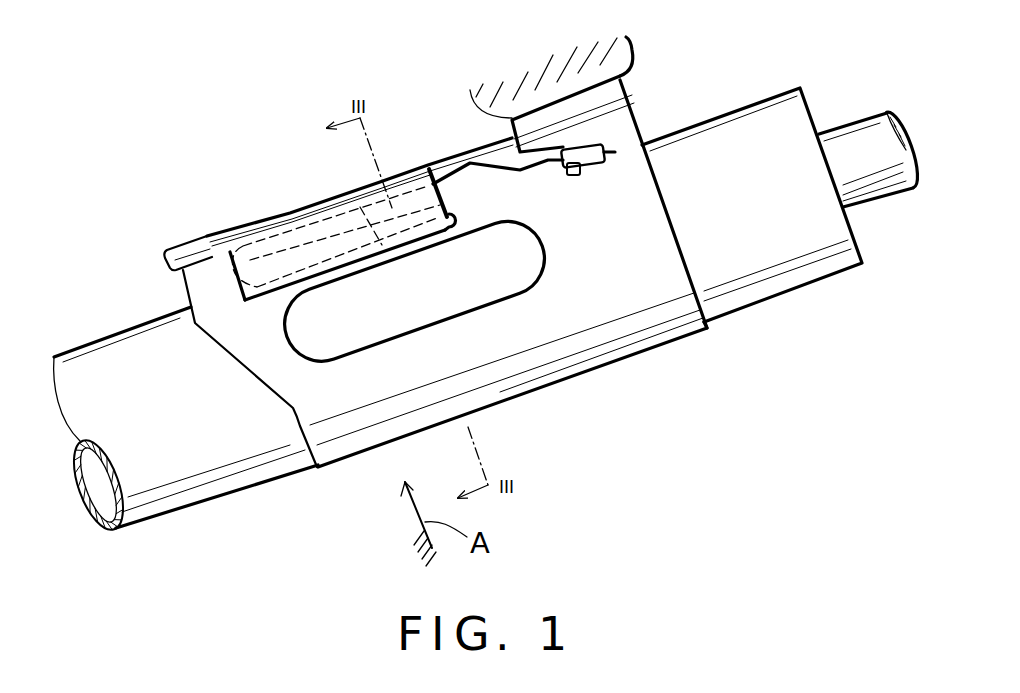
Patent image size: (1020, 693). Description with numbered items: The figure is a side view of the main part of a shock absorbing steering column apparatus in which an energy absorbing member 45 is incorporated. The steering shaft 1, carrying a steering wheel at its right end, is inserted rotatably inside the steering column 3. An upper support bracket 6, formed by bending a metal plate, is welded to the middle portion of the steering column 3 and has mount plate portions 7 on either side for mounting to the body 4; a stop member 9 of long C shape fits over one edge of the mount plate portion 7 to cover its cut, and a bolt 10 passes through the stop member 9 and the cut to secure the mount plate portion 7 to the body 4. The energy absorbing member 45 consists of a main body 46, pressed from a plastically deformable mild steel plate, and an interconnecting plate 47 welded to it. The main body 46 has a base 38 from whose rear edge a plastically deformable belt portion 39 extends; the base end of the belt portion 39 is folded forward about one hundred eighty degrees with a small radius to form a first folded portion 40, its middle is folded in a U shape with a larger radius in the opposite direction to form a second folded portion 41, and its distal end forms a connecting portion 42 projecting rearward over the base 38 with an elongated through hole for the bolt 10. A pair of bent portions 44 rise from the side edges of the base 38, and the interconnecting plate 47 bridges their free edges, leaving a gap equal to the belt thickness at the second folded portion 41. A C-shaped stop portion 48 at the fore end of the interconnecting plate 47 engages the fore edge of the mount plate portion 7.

The steering shaft 1 is at (866, 183).
The steering column 3 is at (752, 262).
The body 4 is at (552, 74).
The upper support bracket 6 is at (345, 438).
The mount plate portion 7 is at (260, 222).
The stop member 9 is at (622, 78).
The bolt 10 is at (640, 138).
The base 38 is at (343, 232).
The belt portion 39 is at (460, 152).
The first folded portion 40 is at (472, 226).
The second folded portion 41 is at (233, 270).
The connecting portion 42 is at (647, 128).
The bent portion 44 is at (316, 209).
The energy absorbing member 45 is at (226, 287).
The main body 46 is at (283, 292).
The interconnecting plate 47 is at (407, 170).
The stop portion 48 is at (187, 237).